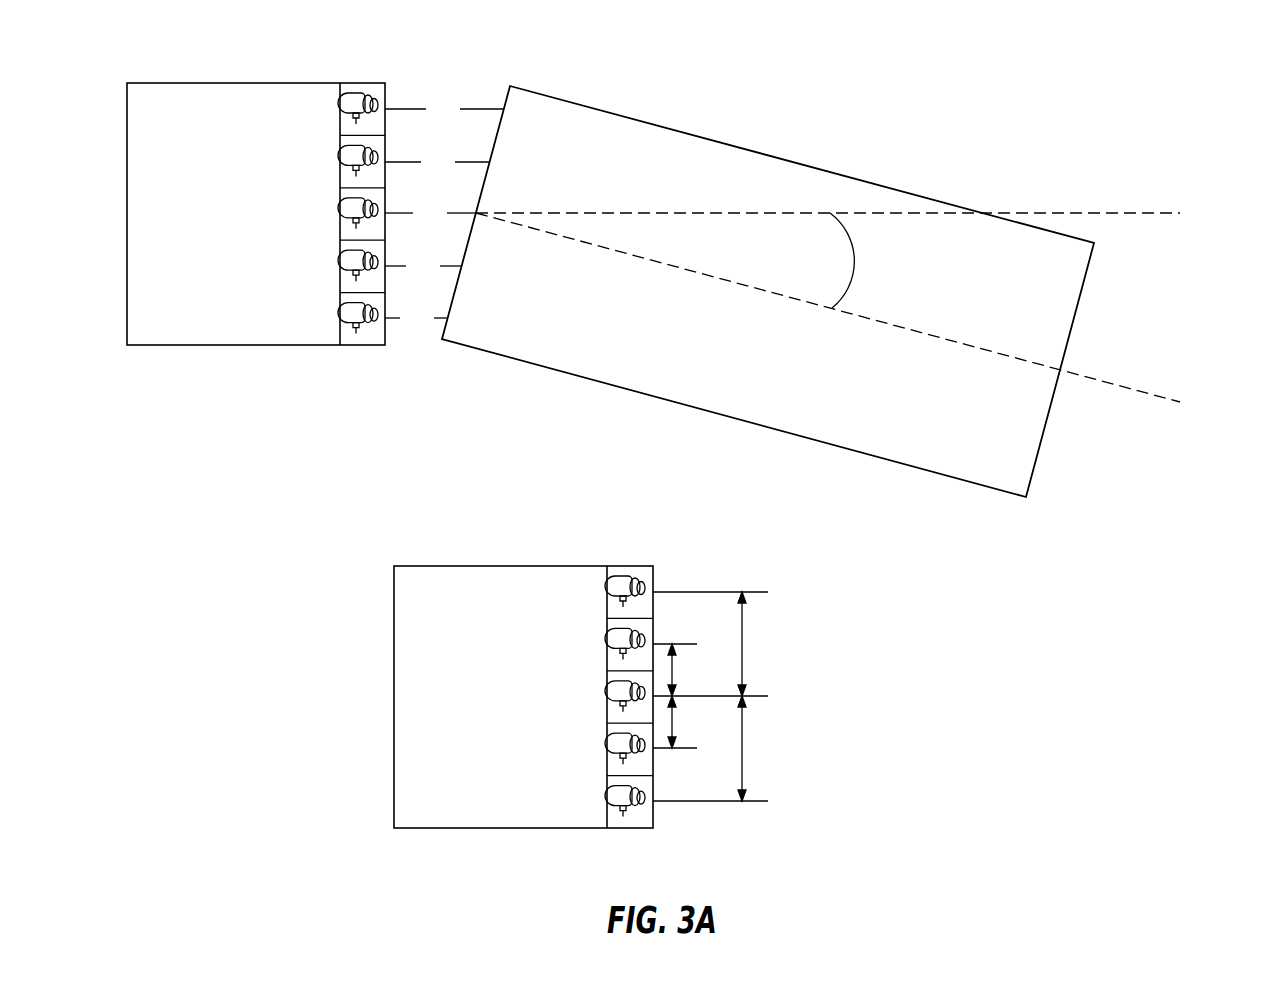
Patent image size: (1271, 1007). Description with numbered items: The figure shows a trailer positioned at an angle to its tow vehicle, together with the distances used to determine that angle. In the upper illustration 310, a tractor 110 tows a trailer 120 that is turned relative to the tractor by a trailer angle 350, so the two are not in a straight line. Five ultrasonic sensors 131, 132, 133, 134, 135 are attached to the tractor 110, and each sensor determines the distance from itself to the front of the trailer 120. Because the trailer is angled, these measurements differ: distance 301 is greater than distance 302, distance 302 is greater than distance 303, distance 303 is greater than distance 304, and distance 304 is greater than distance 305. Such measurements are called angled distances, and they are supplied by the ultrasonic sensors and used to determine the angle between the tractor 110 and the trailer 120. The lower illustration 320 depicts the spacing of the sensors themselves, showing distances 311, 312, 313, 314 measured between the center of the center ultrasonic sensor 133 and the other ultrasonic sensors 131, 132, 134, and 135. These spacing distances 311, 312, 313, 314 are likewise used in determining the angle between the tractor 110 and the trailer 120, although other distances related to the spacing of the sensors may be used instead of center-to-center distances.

The tractor 110 is at (208, 248).
The trailer 120 is at (787, 160).
The ultrasonic sensor 131 is at (344, 105).
The ultrasonic sensor 132 is at (344, 157).
The center ultrasonic sensor 133 is at (344, 210).
The ultrasonic sensor 134 is at (344, 262).
The ultrasonic sensor 135 is at (344, 315).
The distance 301 is at (444, 108).
The distance 302 is at (437, 161).
The distance 303 is at (430, 212).
The distance 304 is at (423, 265).
The distance 305 is at (416, 317).
The illustration of tractor and trailer at an angle 310 is at (625, 36).
The distance 311 is at (745, 649).
The distance 312 is at (675, 678).
The distance 313 is at (675, 733).
The distance 314 is at (745, 760).
The illustration of sensor spacing distances 320 is at (637, 520).
The trailer angle 350 is at (855, 264).